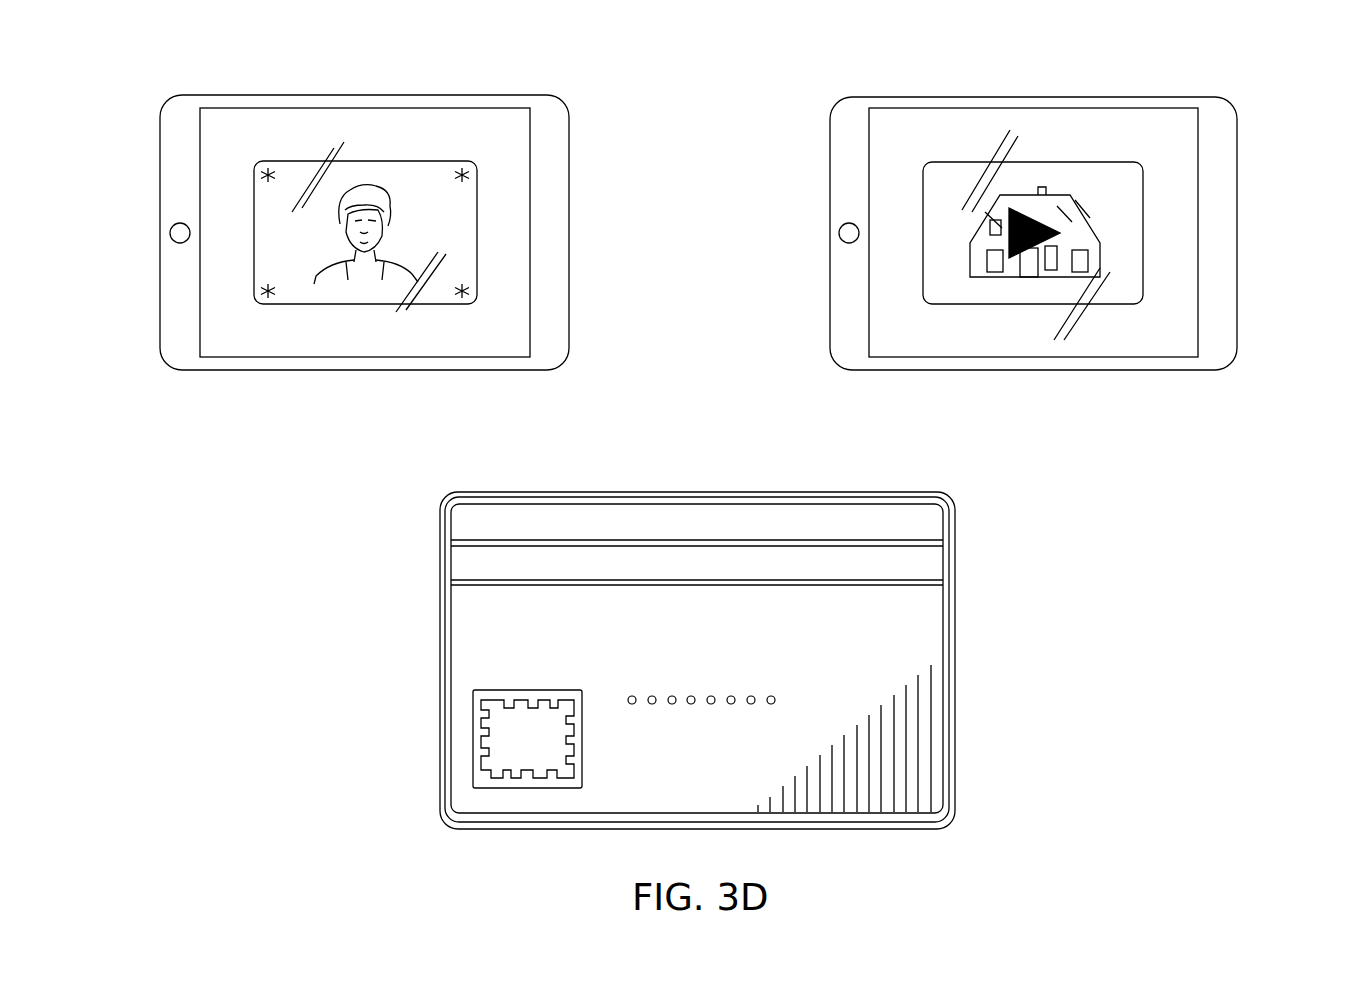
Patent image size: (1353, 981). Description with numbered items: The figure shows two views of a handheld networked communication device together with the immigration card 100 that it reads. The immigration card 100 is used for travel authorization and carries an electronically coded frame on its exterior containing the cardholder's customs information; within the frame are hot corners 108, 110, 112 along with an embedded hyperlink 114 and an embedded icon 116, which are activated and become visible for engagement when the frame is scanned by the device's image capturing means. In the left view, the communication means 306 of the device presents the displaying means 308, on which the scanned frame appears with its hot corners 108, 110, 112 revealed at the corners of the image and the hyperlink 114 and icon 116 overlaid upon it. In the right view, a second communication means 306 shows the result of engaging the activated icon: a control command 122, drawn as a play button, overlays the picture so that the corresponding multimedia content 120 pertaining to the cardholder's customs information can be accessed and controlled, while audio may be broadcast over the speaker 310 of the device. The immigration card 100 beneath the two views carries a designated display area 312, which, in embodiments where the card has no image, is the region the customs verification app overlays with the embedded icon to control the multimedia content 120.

The immigration card 100 is at (654, 491).
The hot corner 108 is at (477, 288).
The hot corner 110 is at (268, 172).
The hot corner 112 is at (472, 163).
The hyperlink 114 is at (477, 172).
The icon 116 is at (270, 300).
The multimedia content 120 is at (1090, 222).
The control command 122 is at (1040, 215).
The communication means 306 is at (188, 93).
The displaying means 308 is at (224, 278).
The speaker 310 is at (940, 283).
The designated display area 312 is at (527, 770).